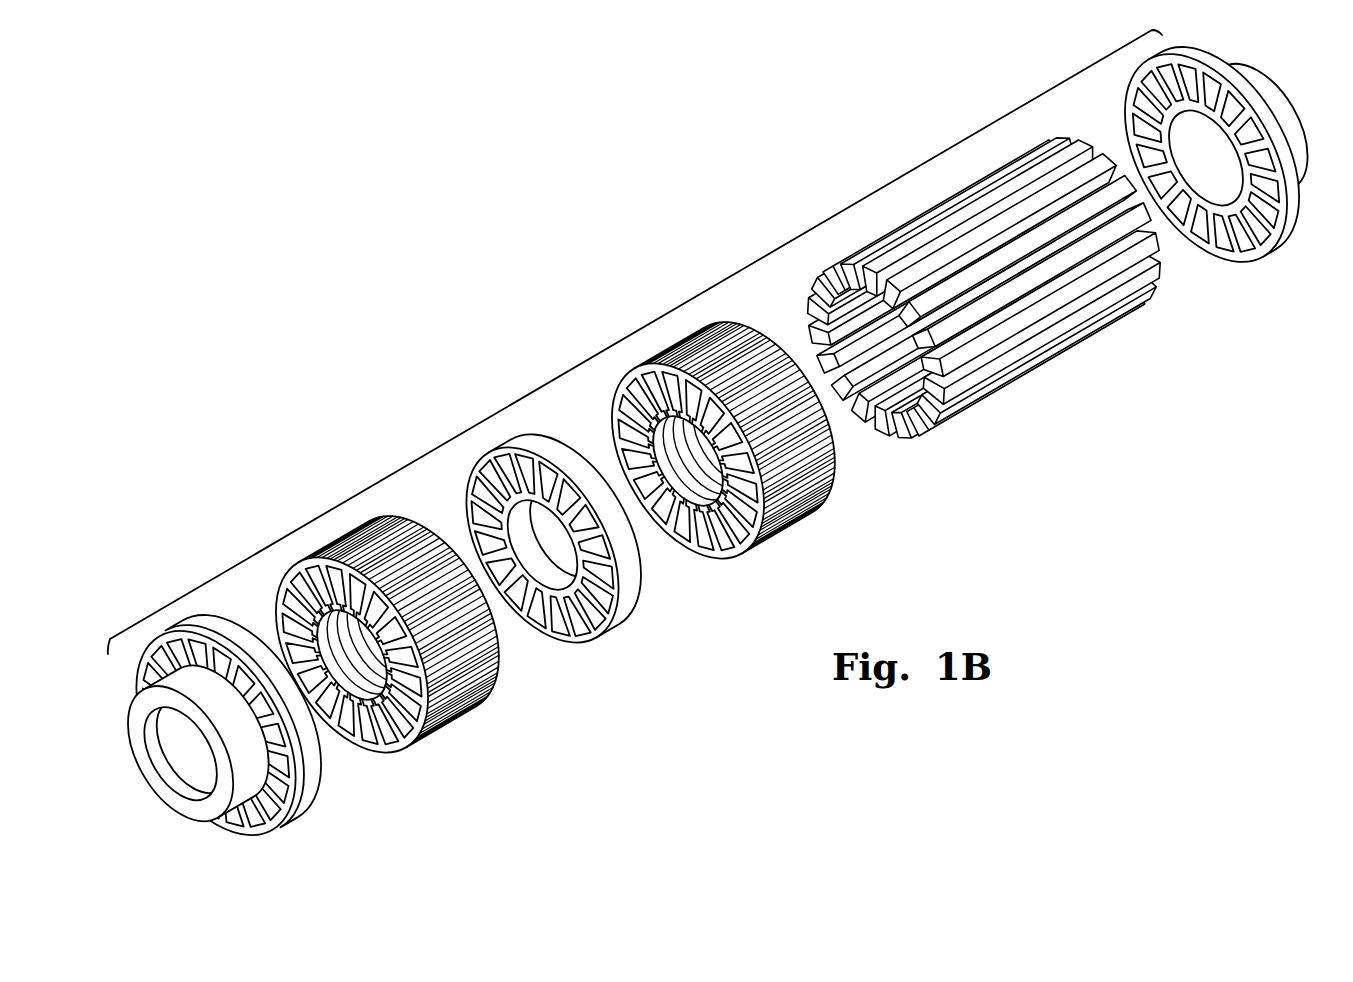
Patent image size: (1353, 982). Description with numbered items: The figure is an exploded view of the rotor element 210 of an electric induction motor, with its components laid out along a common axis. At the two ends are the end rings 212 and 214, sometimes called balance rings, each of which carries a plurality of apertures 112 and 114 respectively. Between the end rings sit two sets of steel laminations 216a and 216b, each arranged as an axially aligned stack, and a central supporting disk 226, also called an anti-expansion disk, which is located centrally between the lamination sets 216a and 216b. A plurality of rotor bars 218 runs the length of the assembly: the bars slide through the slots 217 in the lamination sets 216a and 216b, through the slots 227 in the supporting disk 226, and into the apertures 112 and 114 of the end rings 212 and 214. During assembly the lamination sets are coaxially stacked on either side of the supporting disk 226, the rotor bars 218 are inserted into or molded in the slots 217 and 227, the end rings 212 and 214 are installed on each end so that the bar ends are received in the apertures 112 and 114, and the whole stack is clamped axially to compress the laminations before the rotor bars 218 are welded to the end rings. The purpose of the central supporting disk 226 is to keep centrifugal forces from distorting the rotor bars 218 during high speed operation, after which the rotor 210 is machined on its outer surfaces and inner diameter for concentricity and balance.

The rotor element 210 is at (640, 331).
The end ring 212 is at (1220, 170).
The end ring 214 is at (234, 725).
The apertures 112 is at (1198, 238).
The apertures 114 is at (218, 822).
The steel lamination set 216a is at (448, 723).
The steel lamination set 216b is at (791, 528).
The slots 217 is at (612, 413).
The rotor bars 218 is at (1093, 348).
The central supporting disk 226 is at (554, 545).
The slots 227 is at (495, 453).